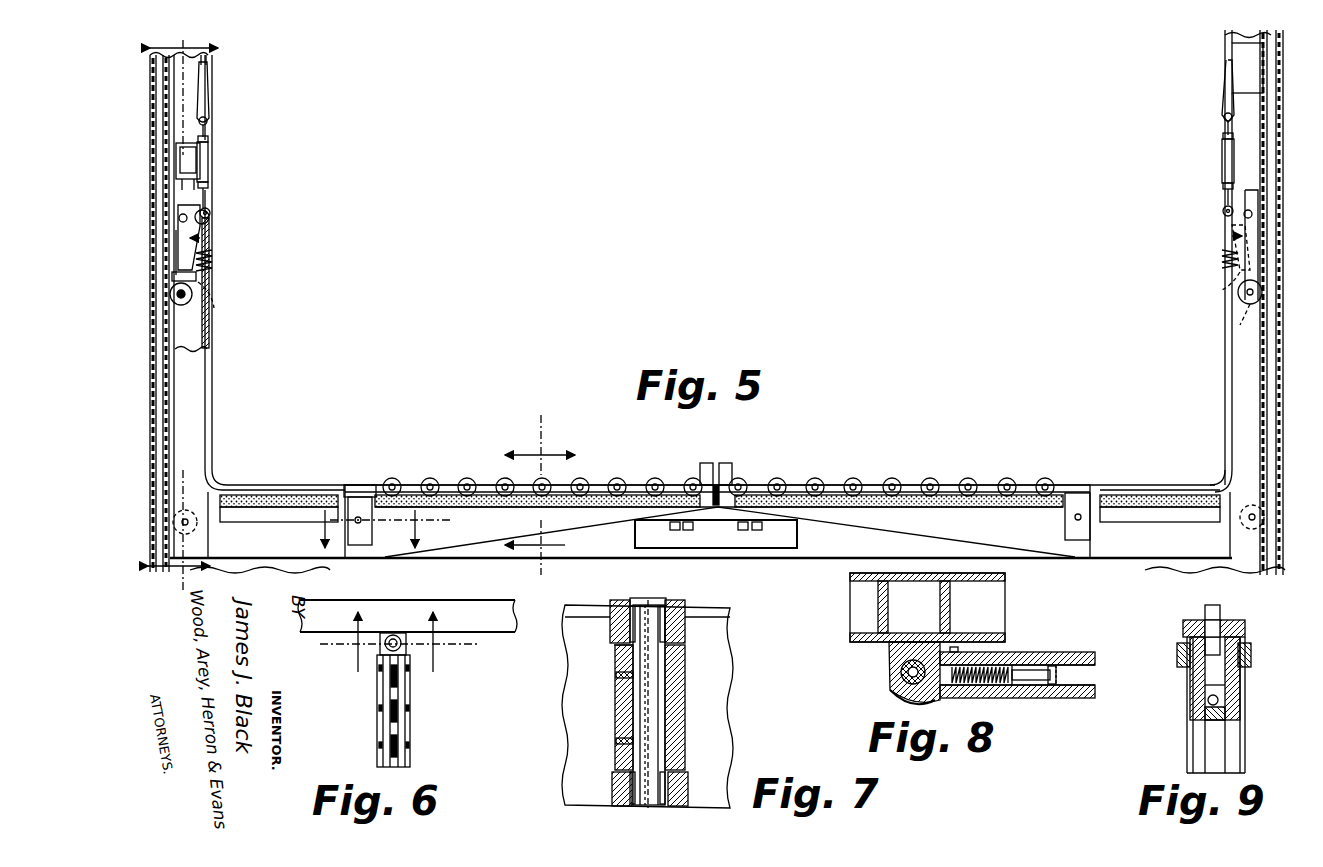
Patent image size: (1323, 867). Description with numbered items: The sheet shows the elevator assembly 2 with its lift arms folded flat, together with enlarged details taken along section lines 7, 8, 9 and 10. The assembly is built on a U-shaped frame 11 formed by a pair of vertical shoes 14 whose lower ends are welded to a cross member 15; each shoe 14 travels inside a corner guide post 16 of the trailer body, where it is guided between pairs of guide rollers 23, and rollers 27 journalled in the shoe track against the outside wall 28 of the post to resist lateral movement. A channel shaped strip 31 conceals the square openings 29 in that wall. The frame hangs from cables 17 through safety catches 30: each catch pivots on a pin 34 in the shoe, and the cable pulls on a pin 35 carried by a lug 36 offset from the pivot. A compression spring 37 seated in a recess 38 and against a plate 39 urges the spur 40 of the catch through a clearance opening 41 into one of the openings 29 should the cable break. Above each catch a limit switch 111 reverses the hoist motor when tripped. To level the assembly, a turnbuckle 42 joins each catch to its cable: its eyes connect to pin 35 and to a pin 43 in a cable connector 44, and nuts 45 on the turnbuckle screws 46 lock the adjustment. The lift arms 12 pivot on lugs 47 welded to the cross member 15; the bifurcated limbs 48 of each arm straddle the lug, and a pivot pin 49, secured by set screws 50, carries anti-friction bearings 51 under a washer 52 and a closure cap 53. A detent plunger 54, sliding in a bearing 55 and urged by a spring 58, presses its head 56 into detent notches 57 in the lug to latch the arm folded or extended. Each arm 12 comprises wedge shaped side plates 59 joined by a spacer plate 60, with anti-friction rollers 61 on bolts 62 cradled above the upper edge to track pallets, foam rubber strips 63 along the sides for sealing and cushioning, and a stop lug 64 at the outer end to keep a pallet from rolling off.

In FIG. 5, the elevator assembly 2 is at (293, 482).
In FIG. 6, the section line 7— 7 is at (393, 642).
In FIG. 5, the section line 8— 8 is at (358, 530).
In FIG. 5, the section line 9— 9 is at (544, 495).
In FIG. 5, the section line 10— 10 is at (198, 315).
In FIG. 5, the U-shaped frame 11 is at (212, 424).
In FIG. 5, the lift arm 12 is at (458, 526).
In FIG. 6, the lift arm 12 is at (458, 688).
In FIG. 8, the lift arm 12 is at (1062, 700).
In FIG. 9, the lift arm 12 is at (1186, 735).
In FIG. 5, the vertical shoe 14 is at (214, 368).
In FIG. 5, the cross member 15 is at (618, 546).
In FIG. 6, the cross member 15 is at (312, 632).
In FIG. 7, the cross member 15 is at (718, 737).
In FIG. 8, the cross member 15 is at (852, 640).
In FIG. 5, the corner guide post 16 is at (188, 392).
In FIG. 5, the cable 17 is at (206, 72).
In FIG. 5, the guide roller 23 is at (1247, 82).
In FIG. 5, the roller 27 is at (202, 300).
In FIG. 5, the outside wall 28 is at (166, 392).
In FIG. 5, the square opening 29 is at (168, 318).
In FIG. 5, the safety catch 30 is at (212, 236).
In FIG. 5, the channel shaped strip 31 is at (151, 90).
In FIG. 5, the pin 34 is at (210, 206).
In FIG. 5, the pin 35 is at (212, 212).
In FIG. 5, the lug 36 is at (205, 222).
In FIG. 5, the compression spring 37 is at (212, 272).
In FIG. 5, the recess 38 is at (214, 290).
In FIG. 5, the plate 39 is at (212, 256).
In FIG. 5, the spur 40 is at (180, 277).
In FIG. 5, the clearance opening 41 is at (176, 258).
In FIG. 5, the turnbuckle 42 is at (208, 160).
In FIG. 5, the pin 43 is at (207, 119).
In FIG. 5, the cable connector 44 is at (208, 95).
In FIG. 5, the nut 45 is at (208, 139).
In FIG. 5, the turnbuckle screw 46 is at (205, 132).
In FIG. 5, the lug 47 is at (360, 482).
In FIG. 7, the lug 47 is at (686, 686).
In FIG. 8, the lug 47 is at (892, 668).
In FIG. 6, the limb 48 is at (397, 634).
In FIG. 7, the limb 48 is at (686, 628).
In FIG. 7, the pivot pin 49 is at (656, 720).
In FIG. 8, the pivot pin 49 is at (902, 682).
In FIG. 7, the set screw 50 is at (616, 676).
In FIG. 7, the anti-friction bearing 51 is at (615, 628).
In FIG. 7, the washer 52 is at (614, 648).
In FIG. 7, the closure cap 53 is at (654, 602).
In FIG. 8, the detent plunger 54 is at (1035, 668).
In FIG. 8, the bearing 55 is at (1052, 666).
In FIG. 8, the head 56 is at (955, 648).
In FIG. 8, the detent notch 57 is at (900, 696).
In FIG. 8, the spring 58 is at (1012, 654).
In FIG. 5, the side plate 59 is at (614, 508).
In FIG. 6, the side plate 59 is at (380, 729).
In FIG. 9, the side plate 59 is at (1192, 692).
In FIG. 9, the spacer plate 60 is at (1220, 719).
In FIG. 5, the anti-friction roller 61 is at (615, 478).
In FIG. 6, the anti-friction roller 61 is at (396, 704).
In FIG. 9, the anti-friction roller 61 is at (1216, 612).
In FIG. 5, the bolt 62 is at (452, 470).
In FIG. 6, the bolt 62 is at (380, 676).
In FIG. 9, the bolt 62 is at (1232, 628).
In FIG. 5, the strip 63 is at (493, 500).
In FIG. 9, the strip 63 is at (1177, 656).
In FIG. 5, the stop lug 64 is at (700, 465).
In FIG. 5, the limit switch 111 is at (182, 161).